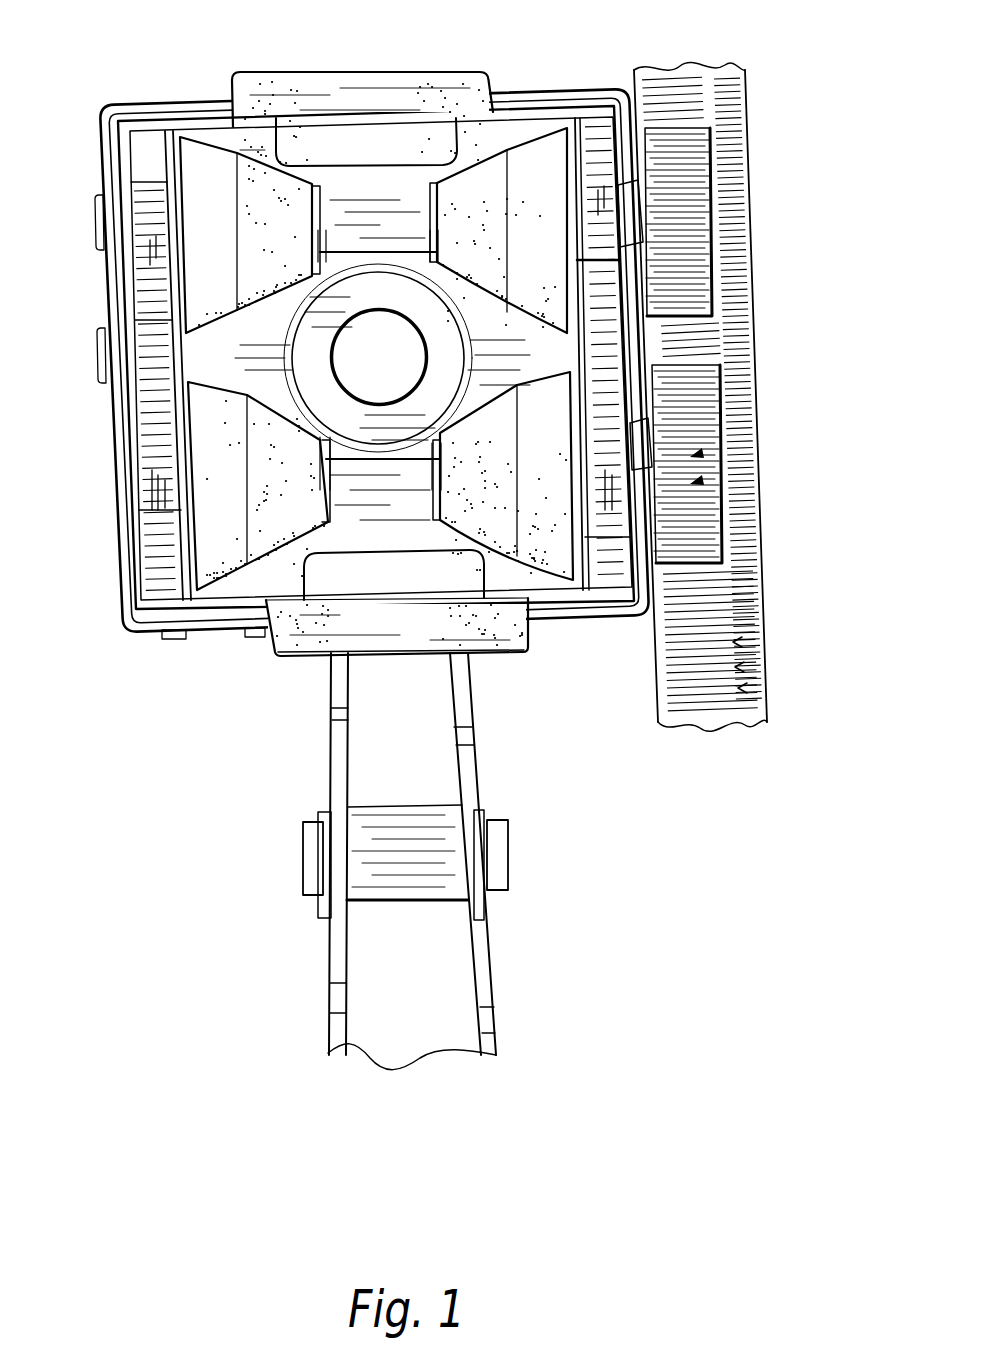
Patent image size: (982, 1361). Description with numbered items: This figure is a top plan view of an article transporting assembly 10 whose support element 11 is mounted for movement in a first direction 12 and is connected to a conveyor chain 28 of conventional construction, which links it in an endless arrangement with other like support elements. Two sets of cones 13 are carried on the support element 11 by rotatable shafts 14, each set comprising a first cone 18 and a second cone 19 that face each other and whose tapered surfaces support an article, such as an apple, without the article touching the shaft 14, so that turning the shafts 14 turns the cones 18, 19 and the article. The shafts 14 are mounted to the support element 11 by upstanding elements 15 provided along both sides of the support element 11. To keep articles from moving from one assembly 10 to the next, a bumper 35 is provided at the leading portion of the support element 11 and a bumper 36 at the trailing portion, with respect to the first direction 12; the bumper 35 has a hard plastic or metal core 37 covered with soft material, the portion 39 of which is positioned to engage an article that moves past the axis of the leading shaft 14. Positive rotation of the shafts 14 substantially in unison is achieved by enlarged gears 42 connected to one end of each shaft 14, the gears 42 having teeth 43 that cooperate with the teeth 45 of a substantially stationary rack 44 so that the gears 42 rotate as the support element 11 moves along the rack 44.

The article transporting assembly 10 is at (431, 536).
The support element 11 is at (597, 620).
The first direction 12 is at (630, 740).
The set of cones 13 is at (170, 393).
The rotatable shaft 14 is at (392, 222).
The upstanding element 15 is at (145, 212).
The first cone 18 is at (263, 127).
The second cone 19 is at (513, 130).
The conveyor chain 28 is at (333, 770).
The bumper 35 is at (338, 630).
The bumper 36 is at (373, 103).
The core 37 is at (430, 603).
The soft material portion 39 is at (415, 574).
The gear 42 is at (722, 113).
The teeth 43 is at (705, 480).
The rack 44 is at (795, 630).
The teeth 45 is at (745, 688).